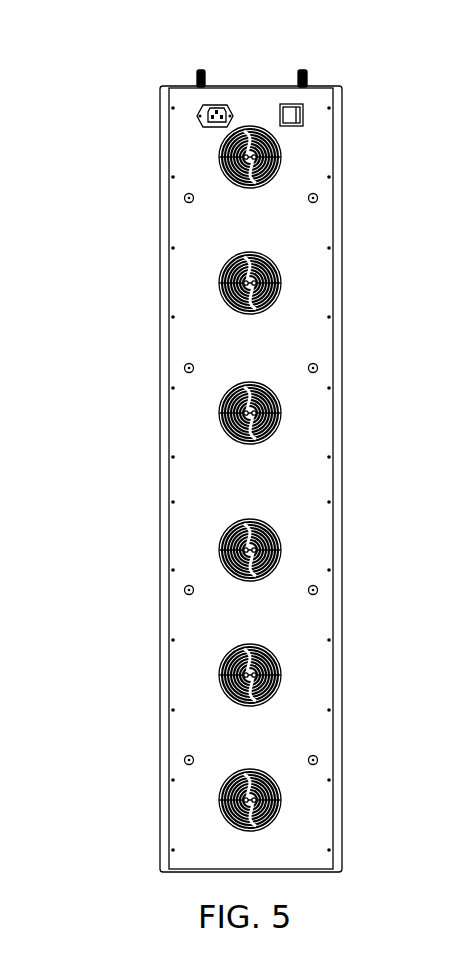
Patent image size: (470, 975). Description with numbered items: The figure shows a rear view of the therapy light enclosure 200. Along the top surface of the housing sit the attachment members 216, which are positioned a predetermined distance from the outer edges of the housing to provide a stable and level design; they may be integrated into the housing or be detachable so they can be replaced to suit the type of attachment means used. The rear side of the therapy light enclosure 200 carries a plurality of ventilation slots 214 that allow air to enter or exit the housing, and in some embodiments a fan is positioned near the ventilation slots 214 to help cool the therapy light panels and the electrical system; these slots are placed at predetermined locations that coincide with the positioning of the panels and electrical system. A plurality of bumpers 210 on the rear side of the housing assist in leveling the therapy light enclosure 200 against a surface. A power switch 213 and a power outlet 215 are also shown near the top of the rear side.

The therapy light enclosure 200 is at (128, 66).
The bumpers 210 is at (187, 203).
The power switch 213 is at (305, 113).
The ventilation slots 214 is at (282, 157).
The power outlet 215 is at (197, 116).
The attachment members 216 is at (298, 74).